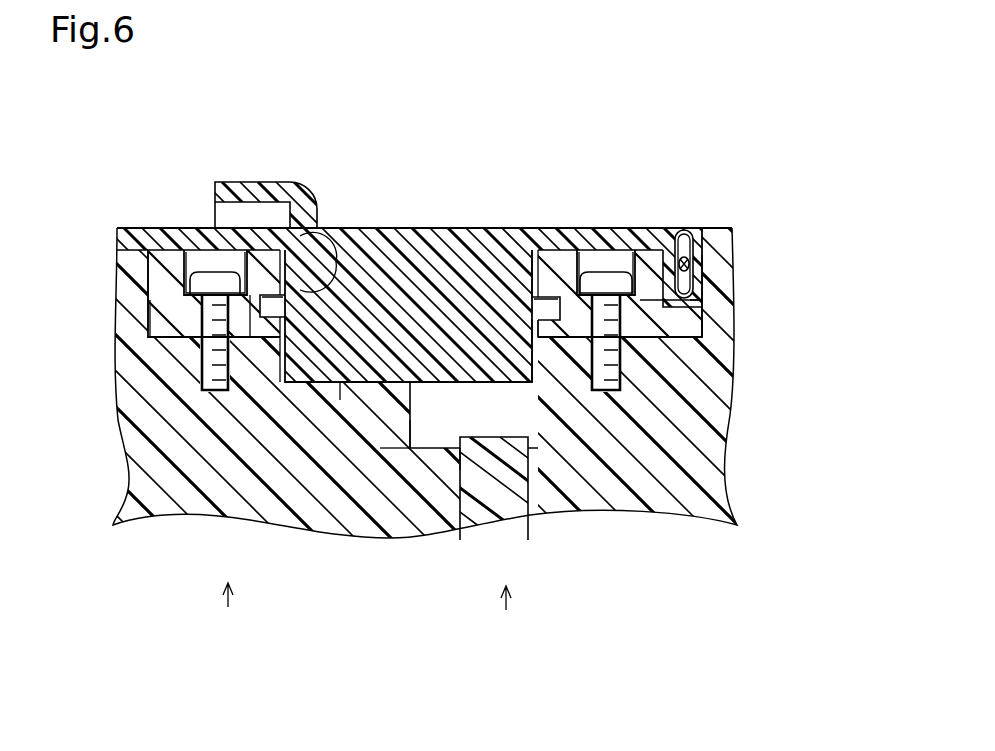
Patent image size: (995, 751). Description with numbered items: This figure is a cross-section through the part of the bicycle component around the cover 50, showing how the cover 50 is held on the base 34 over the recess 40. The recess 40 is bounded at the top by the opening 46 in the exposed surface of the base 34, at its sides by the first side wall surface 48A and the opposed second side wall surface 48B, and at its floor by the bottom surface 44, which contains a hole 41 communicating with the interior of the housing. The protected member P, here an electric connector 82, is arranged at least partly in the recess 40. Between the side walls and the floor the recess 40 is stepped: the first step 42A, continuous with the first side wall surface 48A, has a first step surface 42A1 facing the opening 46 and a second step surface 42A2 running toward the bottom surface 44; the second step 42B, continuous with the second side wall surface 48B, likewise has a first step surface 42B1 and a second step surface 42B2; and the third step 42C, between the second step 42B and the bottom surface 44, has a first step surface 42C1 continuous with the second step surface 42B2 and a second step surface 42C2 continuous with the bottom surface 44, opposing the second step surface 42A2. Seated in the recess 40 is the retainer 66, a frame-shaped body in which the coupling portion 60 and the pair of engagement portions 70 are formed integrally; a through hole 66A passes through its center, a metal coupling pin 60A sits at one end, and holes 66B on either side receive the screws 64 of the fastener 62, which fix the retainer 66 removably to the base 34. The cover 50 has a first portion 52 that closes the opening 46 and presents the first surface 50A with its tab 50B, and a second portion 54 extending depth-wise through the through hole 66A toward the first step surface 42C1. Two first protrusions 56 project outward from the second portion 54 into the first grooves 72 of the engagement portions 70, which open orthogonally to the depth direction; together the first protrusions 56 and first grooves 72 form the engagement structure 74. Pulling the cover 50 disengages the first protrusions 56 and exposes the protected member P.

The base 34 is at (120, 398).
The recess 40 is at (402, 452).
The hole 41 is at (462, 472).
The first step 42A is at (620, 389).
The first step surface 42A1 is at (700, 345).
The second step surface 42A2 is at (541, 340).
The second step 42B is at (198, 430).
The first step surface 42B1 is at (156, 345).
The second step surface 42B2 is at (268, 345).
The third step 42C is at (376, 400).
The first step surface 42C1 is at (352, 440).
The second step surface 42C2 is at (426, 455).
The bottom surface 44 is at (440, 447).
The opening 46 is at (690, 232).
The first side wall surface 48A is at (703, 292).
The second side wall surface 48B is at (148, 268).
The cover 50 is at (446, 272).
The first surface 50A is at (392, 228).
The tab 50B is at (226, 182).
The first portion 52 is at (465, 236).
The second portion 54 is at (478, 382).
The first protrusions 56 is at (282, 250).
The coupling portion 60 is at (719, 253).
The coupling pin 60A is at (700, 258).
The fastener 62 is at (226, 609).
The screws 64 is at (226, 392).
The retainer 66 is at (680, 340).
The through hole 66A is at (334, 266).
The holes 66B is at (186, 265).
The engagement portions 70 is at (245, 345).
The first groove 72 is at (283, 345).
The engagement structure 74 is at (284, 345).
The electric connector 82 is at (497, 498).
The protected member P is at (506, 610).